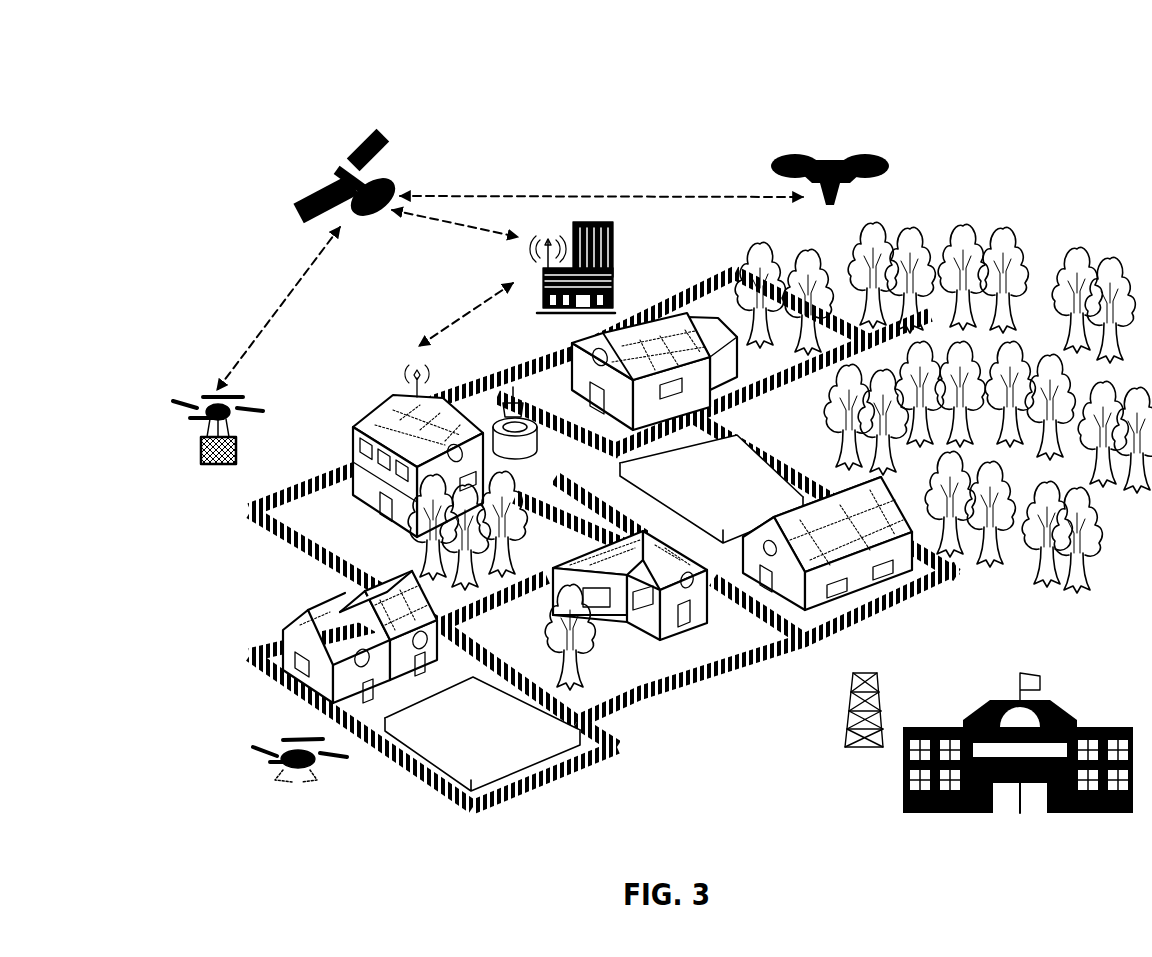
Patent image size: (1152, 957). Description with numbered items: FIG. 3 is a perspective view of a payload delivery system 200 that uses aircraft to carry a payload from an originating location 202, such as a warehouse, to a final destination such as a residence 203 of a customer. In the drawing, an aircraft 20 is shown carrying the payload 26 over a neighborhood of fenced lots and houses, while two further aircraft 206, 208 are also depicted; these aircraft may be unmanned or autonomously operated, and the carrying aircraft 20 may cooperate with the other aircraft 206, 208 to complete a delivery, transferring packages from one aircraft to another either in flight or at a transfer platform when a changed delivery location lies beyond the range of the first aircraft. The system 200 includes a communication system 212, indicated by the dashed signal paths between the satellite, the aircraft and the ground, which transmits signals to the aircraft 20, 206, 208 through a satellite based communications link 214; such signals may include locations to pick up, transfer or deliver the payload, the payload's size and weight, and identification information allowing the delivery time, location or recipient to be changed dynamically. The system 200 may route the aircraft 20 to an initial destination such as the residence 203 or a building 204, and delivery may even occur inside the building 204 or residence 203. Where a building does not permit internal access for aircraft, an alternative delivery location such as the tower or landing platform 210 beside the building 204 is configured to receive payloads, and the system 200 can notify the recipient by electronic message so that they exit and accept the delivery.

The payload delivery system 200 is at (597, 104).
The satellite based communications link 214 is at (306, 210).
The communication system 212 is at (509, 188).
The aircraft 208 is at (843, 141).
The aircraft 20 is at (258, 398).
The payload 26 is at (224, 470).
The originating location 202 is at (353, 438).
The residence 203 is at (597, 630).
The aircraft 206 is at (316, 792).
The tower or landing platform 210 is at (880, 703).
The building 204 is at (907, 803).